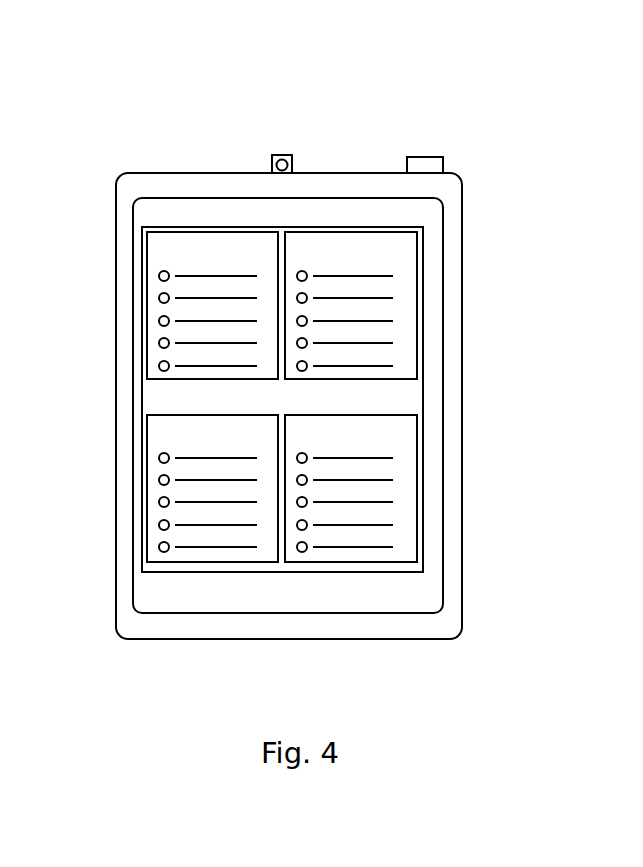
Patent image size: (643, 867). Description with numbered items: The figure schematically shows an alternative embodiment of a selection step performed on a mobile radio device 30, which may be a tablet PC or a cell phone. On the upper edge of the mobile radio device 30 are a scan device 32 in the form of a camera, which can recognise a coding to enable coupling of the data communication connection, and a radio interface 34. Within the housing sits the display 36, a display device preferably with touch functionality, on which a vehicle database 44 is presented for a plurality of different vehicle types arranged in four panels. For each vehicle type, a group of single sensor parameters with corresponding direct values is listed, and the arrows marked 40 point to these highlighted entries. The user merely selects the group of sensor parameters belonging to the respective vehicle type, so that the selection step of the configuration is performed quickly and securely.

The mobile radio device 30 is at (128, 106).
The scan device 32 is at (283, 155).
The radio interface 34 is at (427, 157).
The display 36 is at (436, 596).
The displayed list items 40 is at (408, 476).
The vehicle database 44 is at (392, 227).